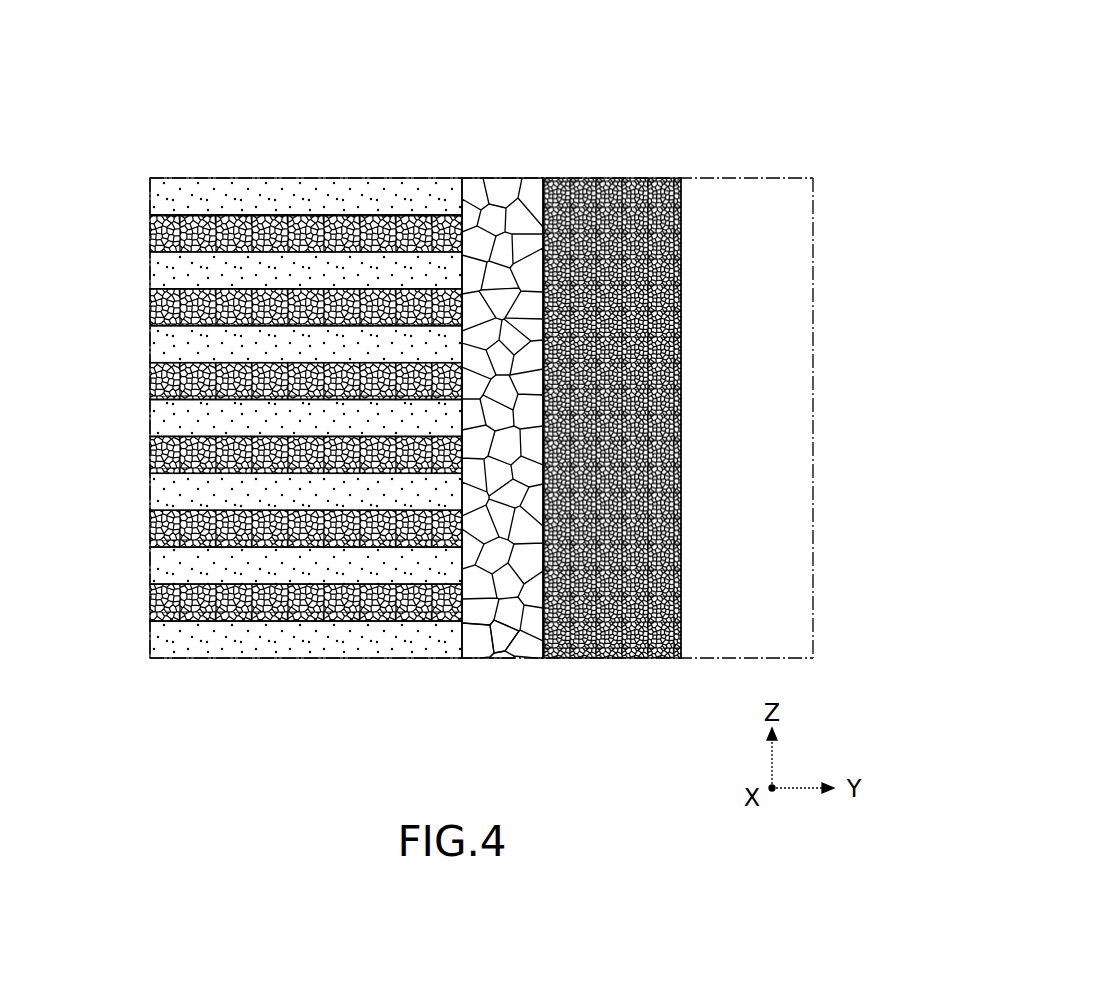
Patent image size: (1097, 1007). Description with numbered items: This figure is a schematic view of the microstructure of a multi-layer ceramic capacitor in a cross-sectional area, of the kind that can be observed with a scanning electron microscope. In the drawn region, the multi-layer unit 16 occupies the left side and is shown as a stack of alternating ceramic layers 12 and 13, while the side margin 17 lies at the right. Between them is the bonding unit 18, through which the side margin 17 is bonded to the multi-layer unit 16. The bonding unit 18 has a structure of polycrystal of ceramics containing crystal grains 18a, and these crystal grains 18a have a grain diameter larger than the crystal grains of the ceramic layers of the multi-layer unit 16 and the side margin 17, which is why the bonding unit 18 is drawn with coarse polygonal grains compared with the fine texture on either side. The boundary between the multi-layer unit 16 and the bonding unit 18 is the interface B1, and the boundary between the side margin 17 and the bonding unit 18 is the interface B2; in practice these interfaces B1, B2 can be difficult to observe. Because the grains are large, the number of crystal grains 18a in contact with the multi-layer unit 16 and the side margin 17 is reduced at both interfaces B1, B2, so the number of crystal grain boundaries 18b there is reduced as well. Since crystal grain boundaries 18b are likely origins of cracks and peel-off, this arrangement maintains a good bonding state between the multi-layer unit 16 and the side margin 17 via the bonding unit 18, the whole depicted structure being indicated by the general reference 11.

The multilayer ceramic electronic component 11 is at (697, 97).
The dielectric layer 12 is at (167, 566).
The internal electrode layer 13 is at (167, 640).
The multi-layer unit 16 is at (252, 385).
The side margin 17 is at (681, 178).
The bonding unit 18 is at (497, 431).
The crystal grains 18a is at (481, 645).
The crystal grain boundaries 18b is at (512, 640).
The interface B1 is at (468, 658).
The interface B2 is at (540, 657).